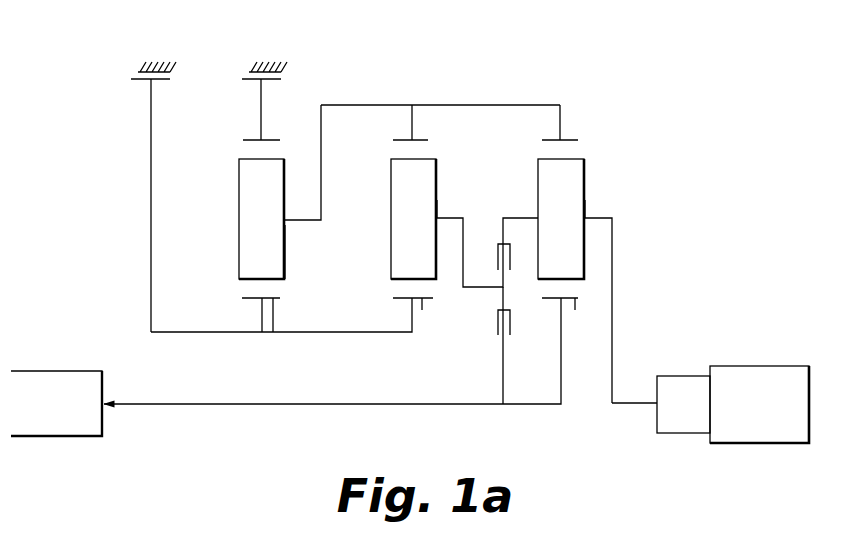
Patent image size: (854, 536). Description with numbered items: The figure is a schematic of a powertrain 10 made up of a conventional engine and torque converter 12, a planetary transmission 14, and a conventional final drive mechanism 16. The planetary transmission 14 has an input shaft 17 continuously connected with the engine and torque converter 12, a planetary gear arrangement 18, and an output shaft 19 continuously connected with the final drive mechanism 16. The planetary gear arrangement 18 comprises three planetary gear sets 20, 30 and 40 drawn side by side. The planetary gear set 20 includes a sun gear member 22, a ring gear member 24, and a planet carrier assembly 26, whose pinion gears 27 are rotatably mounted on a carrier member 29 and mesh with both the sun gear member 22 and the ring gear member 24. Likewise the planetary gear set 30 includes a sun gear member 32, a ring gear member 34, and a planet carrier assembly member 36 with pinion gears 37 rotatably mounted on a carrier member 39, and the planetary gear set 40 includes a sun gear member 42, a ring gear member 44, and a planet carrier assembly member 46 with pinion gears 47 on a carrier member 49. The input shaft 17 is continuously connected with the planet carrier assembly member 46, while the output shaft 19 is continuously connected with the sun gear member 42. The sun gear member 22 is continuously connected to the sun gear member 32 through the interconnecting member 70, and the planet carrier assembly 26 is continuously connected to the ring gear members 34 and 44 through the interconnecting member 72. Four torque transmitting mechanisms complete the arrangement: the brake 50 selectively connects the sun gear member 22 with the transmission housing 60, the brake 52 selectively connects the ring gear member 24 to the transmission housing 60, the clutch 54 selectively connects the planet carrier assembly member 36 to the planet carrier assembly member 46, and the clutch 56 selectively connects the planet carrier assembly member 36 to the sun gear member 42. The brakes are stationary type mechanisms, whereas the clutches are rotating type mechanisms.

The powertrain 10 is at (96, 184).
The engine and torque converter 12 is at (744, 358).
The planetary transmission 14 is at (374, 74).
The final drive mechanism 16 is at (72, 354).
The input shaft 17 is at (630, 405).
The planetary gear arrangement 18 is at (466, 74).
The output shaft 19 is at (185, 406).
The planetary gear set 20 is at (255, 302).
The sun gear member 22 is at (273, 302).
The ring gear member 24 is at (255, 139).
The planet carrier assembly 26 is at (288, 256).
The pinion gears 27 is at (261, 219).
The carrier member 29 is at (300, 223).
The planetary gear set 30 is at (407, 303).
The sun gear member 32 is at (423, 302).
The ring gear member 34 is at (407, 139).
The planet carrier assembly member 36 is at (442, 212).
The pinion gears 37 is at (413, 219).
The carrier member 39 is at (453, 218).
The planetary gear set 40 is at (555, 303).
The sun gear member 42 is at (573, 302).
The ring gear member 44 is at (575, 139).
The planet carrier assembly member 46 is at (594, 212).
The pinion gears 47 is at (561, 219).
The carrier member 49 is at (612, 218).
The brake 50 is at (131, 75).
The brake 52 is at (241, 75).
The clutch 54 is at (494, 258).
The clutch 56 is at (494, 323).
The transmission housing 60 is at (135, 66).
The interconnecting member 70 is at (322, 335).
The interconnecting member 72 is at (427, 105).